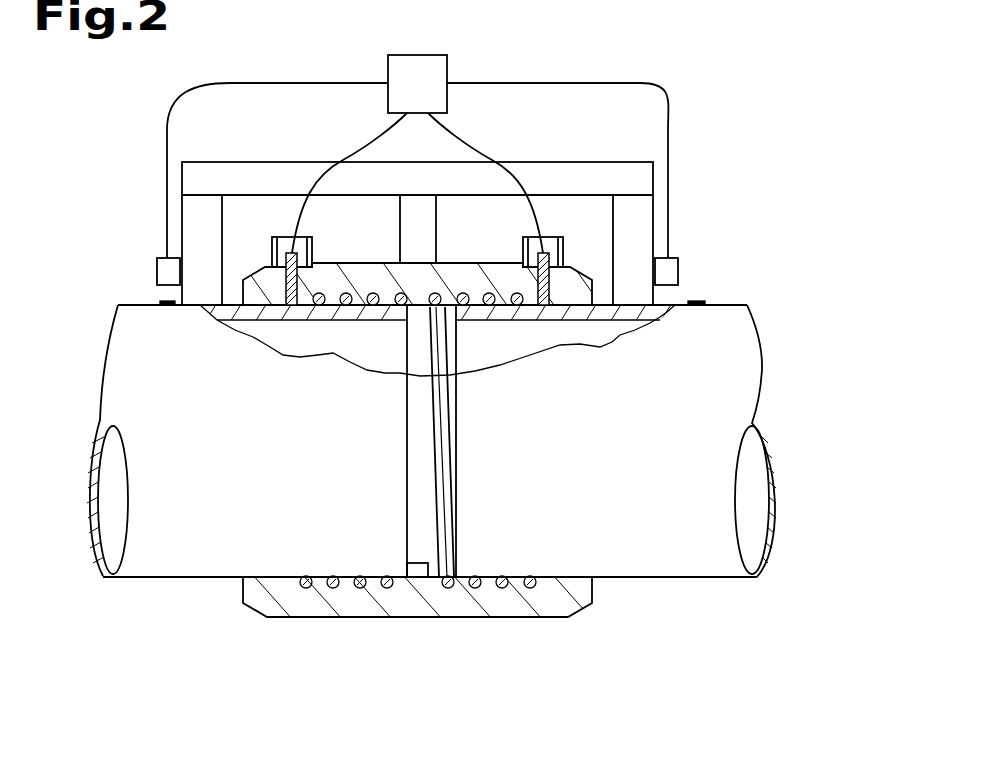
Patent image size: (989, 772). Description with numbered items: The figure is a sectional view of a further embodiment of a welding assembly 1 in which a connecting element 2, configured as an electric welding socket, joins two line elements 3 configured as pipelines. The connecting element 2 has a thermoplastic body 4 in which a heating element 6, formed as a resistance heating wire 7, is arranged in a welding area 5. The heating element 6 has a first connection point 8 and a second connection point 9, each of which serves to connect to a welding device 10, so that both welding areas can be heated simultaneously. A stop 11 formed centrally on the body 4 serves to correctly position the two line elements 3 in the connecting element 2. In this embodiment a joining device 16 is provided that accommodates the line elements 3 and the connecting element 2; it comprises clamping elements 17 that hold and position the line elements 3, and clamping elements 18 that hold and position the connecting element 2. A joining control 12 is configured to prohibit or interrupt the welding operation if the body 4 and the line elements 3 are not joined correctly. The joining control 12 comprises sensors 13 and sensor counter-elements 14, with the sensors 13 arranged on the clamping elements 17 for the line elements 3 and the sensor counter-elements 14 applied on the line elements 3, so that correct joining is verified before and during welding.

The welding assembly 1 is at (798, 104).
The connecting element 2 is at (257, 247).
The line elements 3 is at (78, 280).
The thermoplastic body 4 is at (563, 280).
The welding area 5 is at (320, 548).
The heating element 6 is at (312, 596).
The resistance heating wire 7 is at (358, 588).
The first connection point 8 is at (553, 210).
The second connection point 9 is at (285, 217).
The welding device 10 is at (407, 97).
The stop 11 is at (418, 568).
The joining control 12 is at (133, 290).
The sensor 13 is at (163, 256).
The sensor counter-element 14 is at (163, 307).
The joining device 16 is at (660, 140).
The clamping elements 17 is at (640, 232).
The clamping elements 18 is at (414, 235).